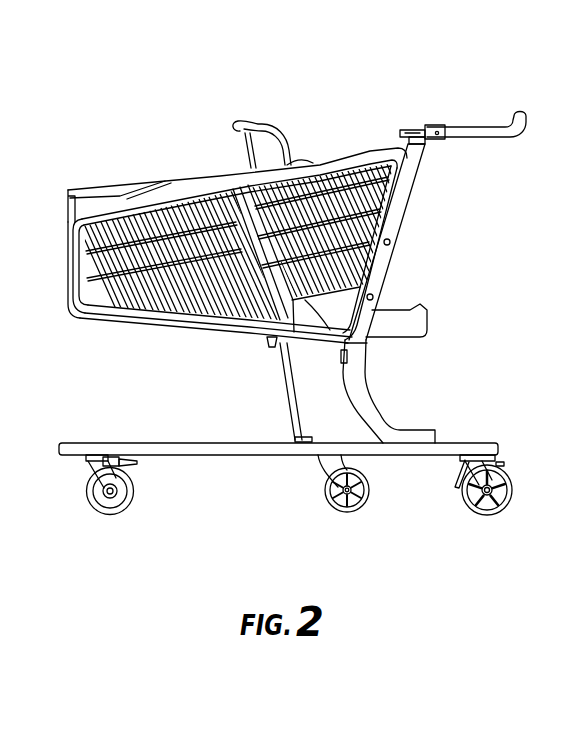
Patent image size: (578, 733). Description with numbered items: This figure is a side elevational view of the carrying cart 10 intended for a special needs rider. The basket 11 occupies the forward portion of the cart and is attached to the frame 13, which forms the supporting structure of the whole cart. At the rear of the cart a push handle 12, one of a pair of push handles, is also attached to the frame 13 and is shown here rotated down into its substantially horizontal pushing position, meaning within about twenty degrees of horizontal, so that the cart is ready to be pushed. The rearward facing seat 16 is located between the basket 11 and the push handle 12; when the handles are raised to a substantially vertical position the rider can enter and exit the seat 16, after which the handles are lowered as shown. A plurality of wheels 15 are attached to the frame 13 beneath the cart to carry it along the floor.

The carrying cart 10 is at (298, 320).
The basket 11 is at (158, 295).
The push handle 12 is at (477, 133).
The frame 13 is at (407, 197).
The wheels 15 is at (337, 505).
The rearward facing seat 16 is at (268, 124).